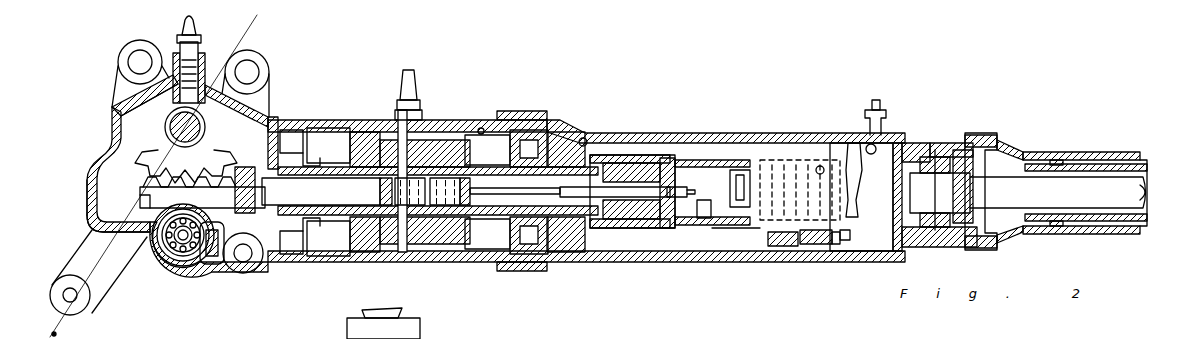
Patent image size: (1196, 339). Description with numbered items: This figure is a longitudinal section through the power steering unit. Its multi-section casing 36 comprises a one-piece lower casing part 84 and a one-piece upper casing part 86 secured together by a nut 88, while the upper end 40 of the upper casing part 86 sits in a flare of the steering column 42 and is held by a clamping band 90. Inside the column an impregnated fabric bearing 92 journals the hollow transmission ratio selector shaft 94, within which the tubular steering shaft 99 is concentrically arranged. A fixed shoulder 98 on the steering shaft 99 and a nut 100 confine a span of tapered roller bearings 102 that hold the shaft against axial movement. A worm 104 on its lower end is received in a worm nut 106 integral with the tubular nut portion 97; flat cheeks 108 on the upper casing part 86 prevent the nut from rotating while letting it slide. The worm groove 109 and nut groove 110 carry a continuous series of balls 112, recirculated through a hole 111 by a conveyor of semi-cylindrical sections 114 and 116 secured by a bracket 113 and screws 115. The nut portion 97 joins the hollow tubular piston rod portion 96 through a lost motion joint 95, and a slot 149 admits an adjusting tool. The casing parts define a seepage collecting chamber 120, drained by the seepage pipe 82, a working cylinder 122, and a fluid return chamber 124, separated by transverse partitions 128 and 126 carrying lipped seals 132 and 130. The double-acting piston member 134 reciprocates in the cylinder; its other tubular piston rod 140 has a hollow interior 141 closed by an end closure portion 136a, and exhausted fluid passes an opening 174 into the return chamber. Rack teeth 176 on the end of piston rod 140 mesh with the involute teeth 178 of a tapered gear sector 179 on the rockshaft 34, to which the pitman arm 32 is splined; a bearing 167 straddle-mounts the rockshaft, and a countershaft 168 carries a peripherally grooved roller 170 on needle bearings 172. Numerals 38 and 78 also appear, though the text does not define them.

The pitman arm 32 is at (98, 277).
The rockshaft 34 is at (165, 125).
The multi-section casing 36 is at (106, 111).
The housing bottom wall 38 is at (90, 226).
The upper end of upper casing part 40 is at (935, 150).
The steering column 42 is at (1030, 150).
The fitting 78 is at (412, 80).
The seepage pipe 82 is at (876, 100).
The lower casing part 84 is at (292, 120).
The upper casing part 86 is at (625, 133).
The nut 88 is at (517, 111).
The clamping band 90 is at (980, 135).
The impregnated fabric bearing 92 is at (1068, 160).
The transmission ratio selector shaft 94 is at (1112, 152).
The lost motion joint 95 is at (652, 156).
The tubular piston rod portion 96 is at (570, 216).
The tubular nut portion 97 is at (720, 158).
The fixed shoulder 98 is at (939, 195).
The tubular steering shaft 99 is at (1145, 178).
The nut 100 is at (980, 205).
The tapered roller bearings 102 is at (922, 160).
The worm 104 is at (866, 197).
The worm nut 106 is at (795, 165).
The cheeks 108 is at (855, 165).
The single pitch groove of worm 109 is at (878, 145).
The single pitch groove of worm nut 110 is at (836, 244).
The hole 111 is at (755, 228).
The balls 112 is at (835, 168).
The bracket 113 is at (805, 244).
The semi-cylindrical section 114 is at (760, 246).
The screws 115 is at (848, 240).
The semi-cylindrical section 116 is at (770, 232).
The seepage collecting chamber 120 is at (585, 138).
The working cylinder 122 is at (480, 128).
The fluid return chamber 124 is at (258, 112).
The transverse partition 126 is at (275, 270).
The transverse partition 128 is at (525, 271).
The lipped seal 130 is at (315, 192).
The lipped seal 132 is at (509, 172).
The piston member 134 is at (378, 132).
The end closure portion 136a is at (321, 191).
The tubular piston rod 140 is at (330, 220).
The hollow interior 141 is at (285, 195).
The slot 149 is at (690, 235).
The bearing 167 is at (232, 100).
The countershaft 168 is at (183, 262).
The peripherally grooved roller 170 is at (205, 255).
The needle bearings 172 is at (176, 250).
The opening 174 is at (245, 168).
The rack teeth 176 is at (87, 182).
The involute teeth 178 is at (121, 140).
The tapered gear sector 179 is at (189, 192).